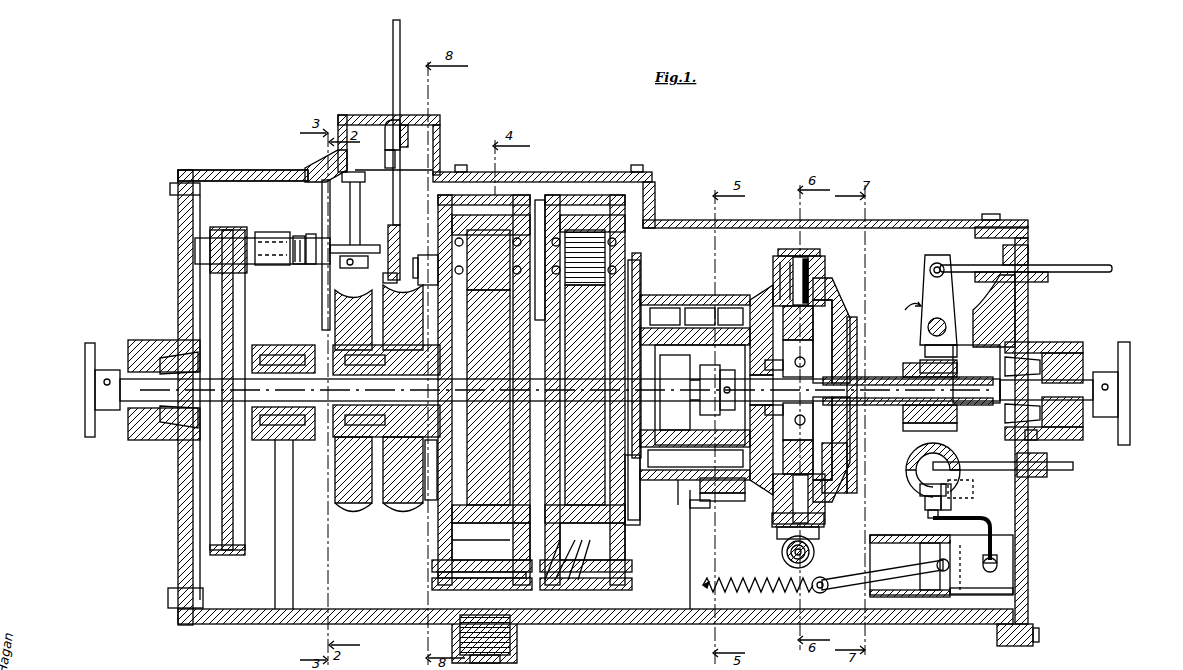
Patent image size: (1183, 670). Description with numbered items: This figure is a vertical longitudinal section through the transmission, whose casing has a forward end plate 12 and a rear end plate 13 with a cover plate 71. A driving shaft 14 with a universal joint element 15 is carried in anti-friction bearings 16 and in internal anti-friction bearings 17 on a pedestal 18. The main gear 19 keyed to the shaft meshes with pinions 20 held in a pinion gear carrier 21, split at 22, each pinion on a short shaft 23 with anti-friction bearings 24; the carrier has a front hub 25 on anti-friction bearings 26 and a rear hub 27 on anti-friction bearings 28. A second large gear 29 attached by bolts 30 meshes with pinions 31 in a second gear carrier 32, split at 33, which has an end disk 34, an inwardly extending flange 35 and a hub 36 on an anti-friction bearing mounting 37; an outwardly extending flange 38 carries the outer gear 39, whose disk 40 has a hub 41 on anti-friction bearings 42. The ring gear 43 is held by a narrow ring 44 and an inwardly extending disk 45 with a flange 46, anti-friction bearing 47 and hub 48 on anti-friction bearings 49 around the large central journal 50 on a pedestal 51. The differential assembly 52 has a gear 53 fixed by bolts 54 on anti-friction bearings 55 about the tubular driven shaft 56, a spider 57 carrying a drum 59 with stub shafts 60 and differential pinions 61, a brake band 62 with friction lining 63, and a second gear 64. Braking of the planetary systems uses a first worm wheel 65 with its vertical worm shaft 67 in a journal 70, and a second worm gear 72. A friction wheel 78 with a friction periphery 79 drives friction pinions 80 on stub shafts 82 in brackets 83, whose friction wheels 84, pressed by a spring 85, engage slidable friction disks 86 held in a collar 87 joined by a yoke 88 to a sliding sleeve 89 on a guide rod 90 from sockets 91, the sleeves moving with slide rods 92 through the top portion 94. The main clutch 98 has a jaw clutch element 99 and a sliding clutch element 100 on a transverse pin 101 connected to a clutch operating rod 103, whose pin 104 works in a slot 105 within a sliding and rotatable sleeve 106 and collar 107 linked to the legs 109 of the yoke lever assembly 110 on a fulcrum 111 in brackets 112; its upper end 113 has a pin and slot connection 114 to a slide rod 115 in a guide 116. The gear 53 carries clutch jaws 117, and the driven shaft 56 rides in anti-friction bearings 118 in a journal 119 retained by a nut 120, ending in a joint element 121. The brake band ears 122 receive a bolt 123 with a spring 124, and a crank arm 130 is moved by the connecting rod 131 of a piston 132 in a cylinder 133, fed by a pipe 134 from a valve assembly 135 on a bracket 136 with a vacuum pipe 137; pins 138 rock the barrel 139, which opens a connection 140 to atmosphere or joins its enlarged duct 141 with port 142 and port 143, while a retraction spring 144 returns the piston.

The forward end plate 12 is at (178, 478).
The rear end plate 13 is at (1028, 533).
The driving shaft 14 is at (115, 347).
The universal joint element 15 is at (85, 405).
The anti-friction bearings 16 is at (165, 440).
The internal anti-friction bearings 17 is at (268, 440).
The pedestal 18 is at (293, 475).
The main gear 19 is at (462, 522).
The pinions 20 is at (478, 230).
The pinion gear carrier 21 is at (452, 545).
The split 22 is at (432, 581).
The short shaft 23 is at (460, 250).
The anti-friction bearings 24 is at (440, 230).
The front hub 25 is at (385, 412).
The anti-friction bearings 26 is at (415, 450).
The rear hub 27 is at (575, 402).
The anti-friction bearings 28 is at (635, 270).
The second large gear 29 is at (620, 525).
The bolts 30 is at (640, 285).
The pinions 31 is at (618, 200).
The second gear carrier 32 is at (622, 540).
The split 33 is at (605, 585).
The end disk 34 is at (615, 495).
The inwardly extending flange 35 is at (590, 580).
The hub 36 is at (570, 580).
The anti-friction bearing mounting 37 is at (555, 580).
The outwardly extending flange 38 is at (545, 582).
The outer gear 39 is at (482, 612).
The disk 40 is at (460, 535).
The hub 41 is at (430, 460).
The anti-friction bearings 42 is at (426, 300).
The ring gear 43 is at (585, 232).
The narrow ring 44 is at (542, 205).
The inwardly extending disk 45 is at (655, 300).
The flange 46 is at (665, 312).
The anti-friction bearing 47 is at (695, 312).
The hub 48 is at (728, 312).
The anti-friction bearings 49 is at (740, 300).
The large central journal 50 is at (738, 500).
The pedestal 51 is at (690, 570).
The differential assembly 52 is at (825, 252).
The gear 53 is at (785, 358).
The bolts 54 is at (756, 300).
The anti-friction bearings 55 is at (785, 415).
The tubular driven shaft 56 is at (1088, 368).
The spider 57 is at (840, 305).
The drum 59 is at (776, 530).
The stub shafts 60 is at (808, 280).
The differential pinions 61 is at (810, 268).
The brake band 62 is at (795, 265).
The friction lining 63 is at (778, 252).
The second gear 64 is at (870, 330).
The first worm wheel 65 is at (338, 334).
The vertical worm shaft 67 is at (350, 212).
The journal 70 is at (358, 172).
The cover plate 71 is at (235, 164).
The second worm gear 72 is at (418, 280).
The friction wheel 78 is at (233, 505).
The friction periphery 79 is at (226, 556).
The friction pinions 80 is at (220, 228).
The stub shaft 82 is at (295, 240).
The brackets 83 is at (275, 266).
The friction wheel 84 is at (322, 302).
The spring 85 is at (300, 236).
The slidable friction disks 86 is at (372, 246).
The collar 87 is at (340, 262).
The yoke 88 is at (386, 283).
The sliding sleeve 89 is at (400, 225).
The guide rod 90 is at (402, 163).
The sockets 91 is at (402, 128).
The slide rods 92 is at (401, 30).
The top portion 94 is at (405, 120).
The main clutch 98 is at (710, 508).
The jaw clutch element 99 is at (678, 505).
The sliding clutch element 100 is at (726, 410).
The transverse pin 101 is at (745, 382).
The clutch operating rod 103 is at (875, 378).
The pin 104 is at (955, 378).
The slot 105 is at (955, 408).
The sliding and rotatable sleeve 106 is at (912, 422).
The collar 107 is at (925, 432).
The legs 109 is at (925, 362).
The yoke lever assembly 110 is at (904, 311).
The fulcrum 111 is at (945, 322).
The brackets 112 is at (985, 316).
The upper end 113 is at (935, 292).
The pin and slot connection 114 is at (943, 265).
The slide rod 115 is at (1063, 268).
The guide 116 is at (1003, 262).
The clutch jaws 117 is at (710, 372).
The anti-friction bearings 118 is at (1050, 352).
The journal 119 is at (1030, 346).
The nut 120 is at (1075, 438).
The joint element 121 is at (1130, 360).
The ears 122 is at (815, 542).
The bolt 123 is at (790, 554).
The spring 124 is at (806, 553).
The crank arm 130 is at (828, 592).
The connecting rod 131 is at (875, 585).
The piston 132 is at (925, 598).
The cylinder 133 is at (975, 594).
The pipe 134 is at (995, 547).
The valve assembly 135 is at (920, 490).
The bracket 136 is at (1015, 487).
The pipe 137 is at (1075, 460).
The pins 138 is at (972, 490).
The barrel 139 is at (910, 472).
The connection to atmosphere 140 is at (910, 485).
The enlarged duct 141 is at (926, 505).
The port 142 is at (768, 420).
The port 143 is at (950, 498).
The retraction spring 144 is at (780, 590).